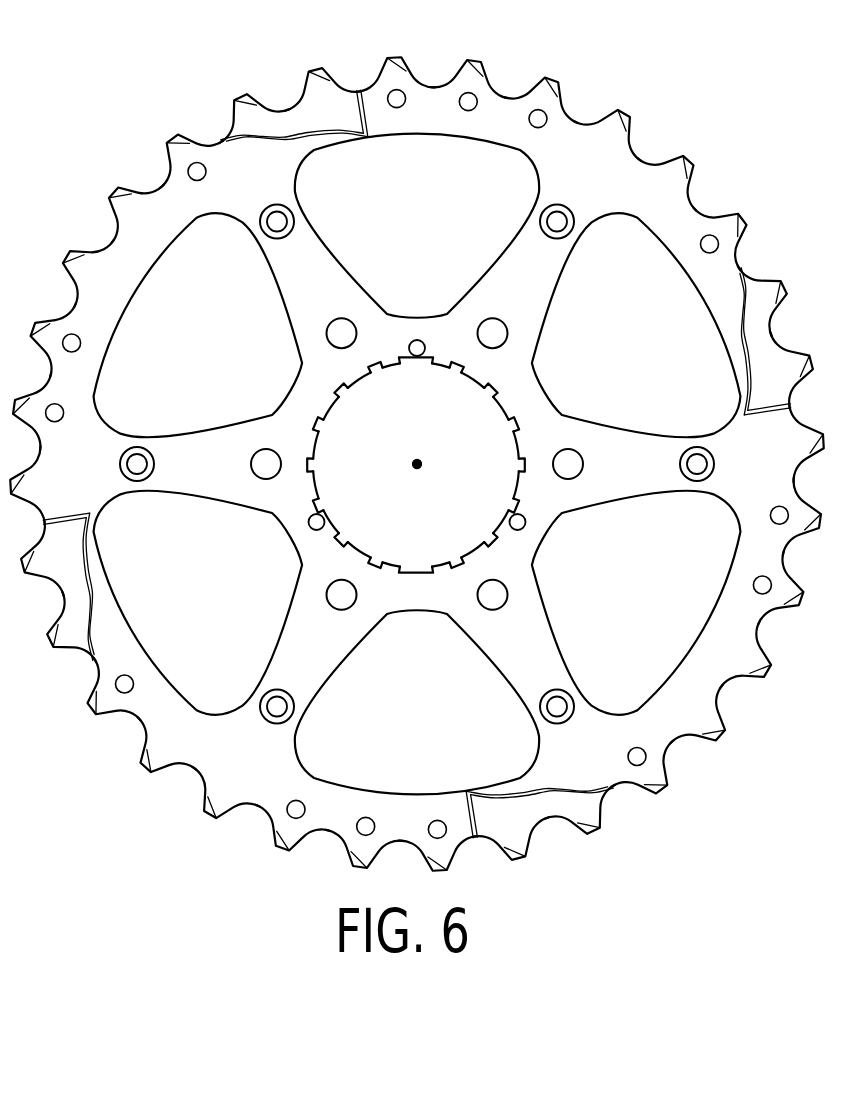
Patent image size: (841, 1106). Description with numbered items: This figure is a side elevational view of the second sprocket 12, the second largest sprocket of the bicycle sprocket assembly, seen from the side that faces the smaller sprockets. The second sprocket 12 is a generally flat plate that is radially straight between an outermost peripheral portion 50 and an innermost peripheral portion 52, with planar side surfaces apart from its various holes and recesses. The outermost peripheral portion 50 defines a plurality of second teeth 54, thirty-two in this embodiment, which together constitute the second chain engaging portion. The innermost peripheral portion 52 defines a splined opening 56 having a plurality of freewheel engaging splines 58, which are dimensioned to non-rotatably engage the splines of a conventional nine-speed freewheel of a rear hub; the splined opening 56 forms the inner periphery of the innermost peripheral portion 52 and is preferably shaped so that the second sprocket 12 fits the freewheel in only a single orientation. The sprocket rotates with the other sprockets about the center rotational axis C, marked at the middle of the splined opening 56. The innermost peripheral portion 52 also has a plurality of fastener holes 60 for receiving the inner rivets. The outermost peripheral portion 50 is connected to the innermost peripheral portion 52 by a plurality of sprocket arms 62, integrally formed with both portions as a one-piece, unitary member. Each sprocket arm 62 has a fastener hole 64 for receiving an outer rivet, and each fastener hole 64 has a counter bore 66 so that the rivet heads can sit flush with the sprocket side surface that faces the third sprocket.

The second sprocket 12 is at (162, 136).
The outermost peripheral portion 50 is at (587, 183).
The innermost peripheral portion 52 is at (505, 368).
The second teeth 54 is at (472, 65).
The splined opening 56 is at (500, 412).
The freewheel engaging splines 58 is at (327, 414).
The fastener holes 60 is at (416, 340).
The sprocket arms 62 is at (305, 273).
The fastener hole 64 is at (266, 236).
The counter bore 66 is at (293, 216).
The center rotational axis C is at (413, 462).